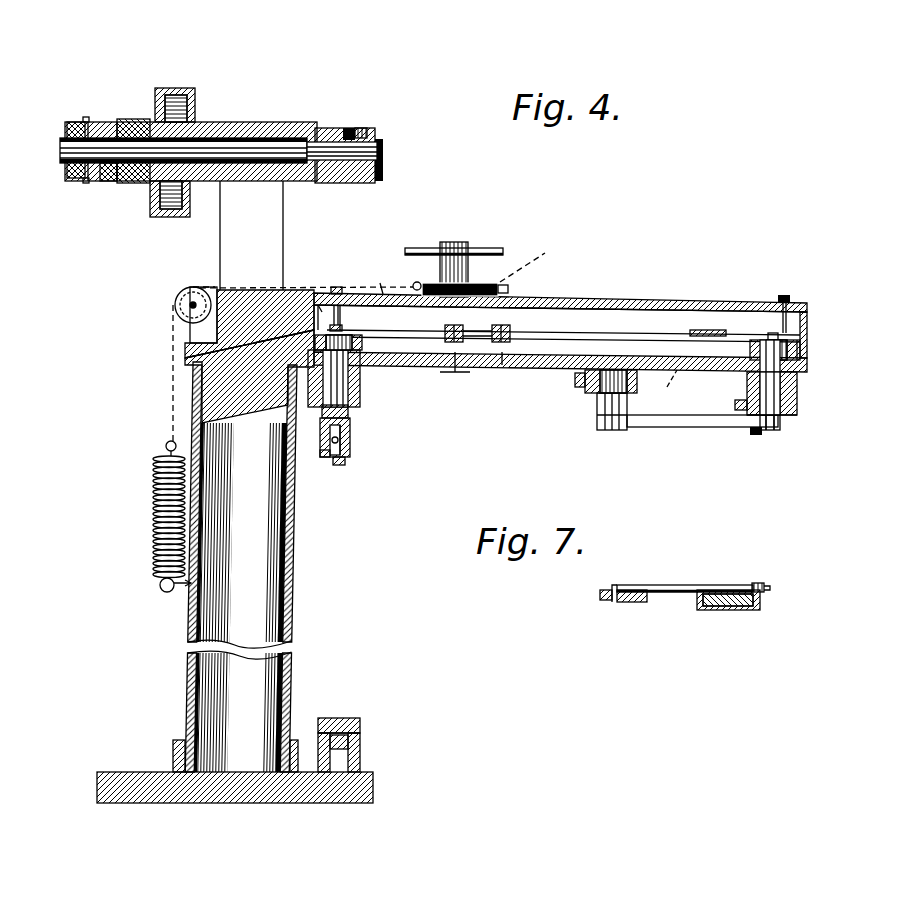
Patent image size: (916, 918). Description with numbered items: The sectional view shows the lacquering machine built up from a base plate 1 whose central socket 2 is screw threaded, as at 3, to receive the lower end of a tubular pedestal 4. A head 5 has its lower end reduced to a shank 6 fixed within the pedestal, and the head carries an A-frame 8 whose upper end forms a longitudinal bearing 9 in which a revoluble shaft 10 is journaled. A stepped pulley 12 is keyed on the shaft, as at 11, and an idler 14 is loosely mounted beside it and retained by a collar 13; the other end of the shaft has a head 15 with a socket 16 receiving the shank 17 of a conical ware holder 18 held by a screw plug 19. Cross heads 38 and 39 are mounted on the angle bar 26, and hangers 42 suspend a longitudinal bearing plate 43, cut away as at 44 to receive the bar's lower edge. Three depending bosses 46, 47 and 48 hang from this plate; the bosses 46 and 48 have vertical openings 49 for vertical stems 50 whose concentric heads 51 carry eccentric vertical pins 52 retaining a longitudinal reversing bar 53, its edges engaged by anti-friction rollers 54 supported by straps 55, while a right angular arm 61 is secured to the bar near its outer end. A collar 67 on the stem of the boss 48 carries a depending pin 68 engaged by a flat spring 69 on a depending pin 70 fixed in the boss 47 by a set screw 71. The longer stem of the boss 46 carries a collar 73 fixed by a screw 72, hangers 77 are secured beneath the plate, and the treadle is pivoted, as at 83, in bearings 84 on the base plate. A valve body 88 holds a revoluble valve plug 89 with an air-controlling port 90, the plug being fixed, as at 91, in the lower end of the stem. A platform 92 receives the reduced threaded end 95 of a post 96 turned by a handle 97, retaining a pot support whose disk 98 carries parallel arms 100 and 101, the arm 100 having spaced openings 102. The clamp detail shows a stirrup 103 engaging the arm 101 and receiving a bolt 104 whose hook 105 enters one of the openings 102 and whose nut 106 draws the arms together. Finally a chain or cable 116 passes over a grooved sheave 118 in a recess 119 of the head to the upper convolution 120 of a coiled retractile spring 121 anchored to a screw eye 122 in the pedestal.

In FIG. 4, the base plate 1 is at (109, 778).
In FIG. 4, the central socket 2 is at (178, 740).
In FIG. 4, the screw threads 3 is at (294, 742).
In FIG. 4, the tubular pedestal 4 is at (295, 606).
In FIG. 4, the head 5 is at (258, 325).
In FIG. 4, the shank 6 is at (220, 388).
In FIG. 4, the A-frame 8 is at (281, 234).
In FIG. 4, the longitudinal bearing 9 is at (280, 130).
In FIG. 4, the longitudinal revoluble shaft 10 is at (240, 150).
In FIG. 4, the key 11 is at (138, 119).
In FIG. 4, the stepped pulley 12 is at (176, 90).
In FIG. 4, the collar 13 is at (73, 120).
In FIG. 4, the idler 14 is at (101, 121).
In FIG. 4, the head 15 is at (340, 126).
In FIG. 4, the socket 16 is at (352, 129).
In FIG. 4, the shank 17 is at (346, 160).
In FIG. 4, the conical-shaped ware holder 18 is at (384, 146).
In FIG. 4, the screw plug 19 is at (363, 128).
In FIG. 4, the angle bar 26 is at (596, 318).
In FIG. 4, the cross head 38 is at (381, 282).
In FIG. 4, the cross head 39 is at (793, 305).
In FIG. 4, the hangers 42 is at (323, 305).
In FIG. 4, the longitudinal bearing plate 43 is at (443, 364).
In FIG. 4, the cut-away edge 44 is at (690, 408).
In FIG. 4, the depending boss 46 is at (362, 383).
In FIG. 4, the depending boss 47 is at (600, 384).
In FIG. 4, the depending boss 48 is at (798, 386).
In FIG. 4, the vertical openings 49 is at (362, 388).
In FIG. 4, the vertical stems 50 is at (364, 367).
In FIG. 4, the concentric heads 51 is at (339, 294).
In FIG. 4, the vertical pins 52 is at (190, 356).
In FIG. 4, the longitudinal reversing bar 53 is at (603, 340).
In FIG. 4, the anti-friction rollers 54 is at (528, 322).
In FIG. 4, the straps 55 is at (531, 296).
In FIG. 4, the right angular arm 61 is at (711, 331).
In FIG. 4, the collar 67 is at (797, 416).
In FIG. 4, the depending pin 68 is at (760, 435).
In FIG. 4, the flat spring 69 is at (667, 428).
In FIG. 4, the depending pin 70 is at (611, 429).
In FIG. 4, the set screw 71 is at (575, 381).
In FIG. 4, the screw 72 is at (196, 413).
In FIG. 4, the collar 73 is at (365, 404).
In FIG. 4, the hangers 77 is at (350, 421).
In FIG. 4, the pivot 83 is at (362, 731).
In FIG. 4, the bearings 84 is at (362, 758).
In FIG. 4, the valve body 88 is at (339, 463).
In FIG. 4, the revoluble valve plug 89 is at (348, 456).
In FIG. 4, the port 90 is at (323, 454).
In FIG. 4, the fixed connection 91 is at (352, 416).
In FIG. 4, the platform 92 is at (688, 305).
In FIG. 4, the reduced threaded end 95 is at (540, 265).
In FIG. 4, the post 96 is at (476, 250).
In FIG. 4, the handle 97 is at (429, 248).
In FIG. 4, the disk 98 is at (416, 281).
In FIG. 4, the chain or cable 116 is at (223, 284).
In FIG. 4, the revoluble grooved sheave 118 is at (175, 307).
In FIG. 4, the recess 119 is at (193, 332).
In FIG. 4, the upper convolution 120 is at (167, 450).
In FIG. 4, the coiled retractile spring 121 is at (153, 506).
In FIG. 4, the screw eye 122 is at (158, 585).
In FIG. 7, the arm 100 is at (600, 596).
In FIG. 7, the arm 101 is at (758, 600).
In FIG. 7, the openings 102 is at (610, 587).
In FIG. 7, the stirrup 103 is at (728, 611).
In FIG. 7, the bolt 104 is at (671, 586).
In FIG. 7, the hook 105 is at (614, 604).
In FIG. 7, the nut 106 is at (766, 586).